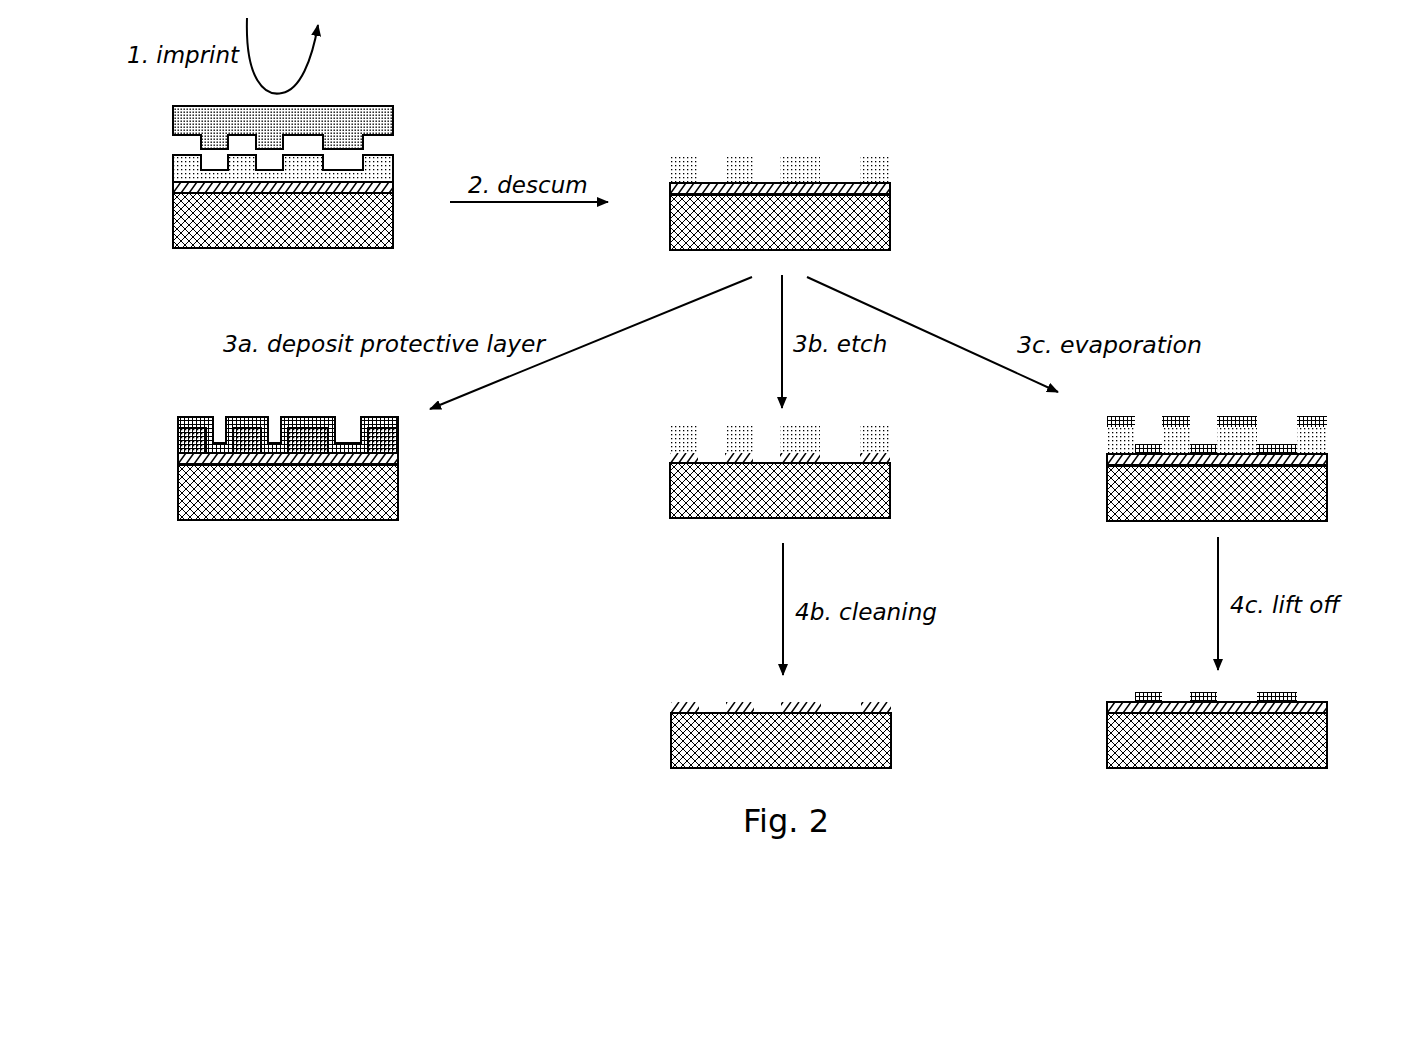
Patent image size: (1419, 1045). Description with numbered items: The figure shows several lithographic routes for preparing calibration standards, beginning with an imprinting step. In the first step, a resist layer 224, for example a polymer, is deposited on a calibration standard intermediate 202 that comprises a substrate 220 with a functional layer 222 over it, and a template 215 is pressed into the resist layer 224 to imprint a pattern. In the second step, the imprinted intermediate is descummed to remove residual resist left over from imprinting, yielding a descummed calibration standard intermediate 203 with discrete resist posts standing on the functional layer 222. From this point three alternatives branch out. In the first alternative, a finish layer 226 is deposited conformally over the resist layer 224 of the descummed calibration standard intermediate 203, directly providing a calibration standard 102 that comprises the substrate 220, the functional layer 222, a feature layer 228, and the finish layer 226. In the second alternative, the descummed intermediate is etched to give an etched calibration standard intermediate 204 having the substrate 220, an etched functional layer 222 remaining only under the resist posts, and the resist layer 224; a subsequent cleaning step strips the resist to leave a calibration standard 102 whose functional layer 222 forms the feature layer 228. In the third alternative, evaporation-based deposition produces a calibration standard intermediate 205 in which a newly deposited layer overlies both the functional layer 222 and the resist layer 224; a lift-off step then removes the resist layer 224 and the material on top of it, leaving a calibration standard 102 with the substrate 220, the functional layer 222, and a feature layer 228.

The calibration standard 102 is at (226, 532).
The calibration standard intermediate 202 is at (222, 260).
The descummed calibration standard intermediate 203 is at (856, 131).
The etched calibration standard intermediate 204 is at (740, 539).
The calibration standard intermediate 205 is at (1172, 535).
The template 215 is at (377, 122).
The substrate 220 is at (200, 215).
The functional layer 222 is at (370, 187).
The resist layer 224 is at (187, 167).
The finish layer 226 is at (178, 425).
The feature layer 228 is at (407, 428).